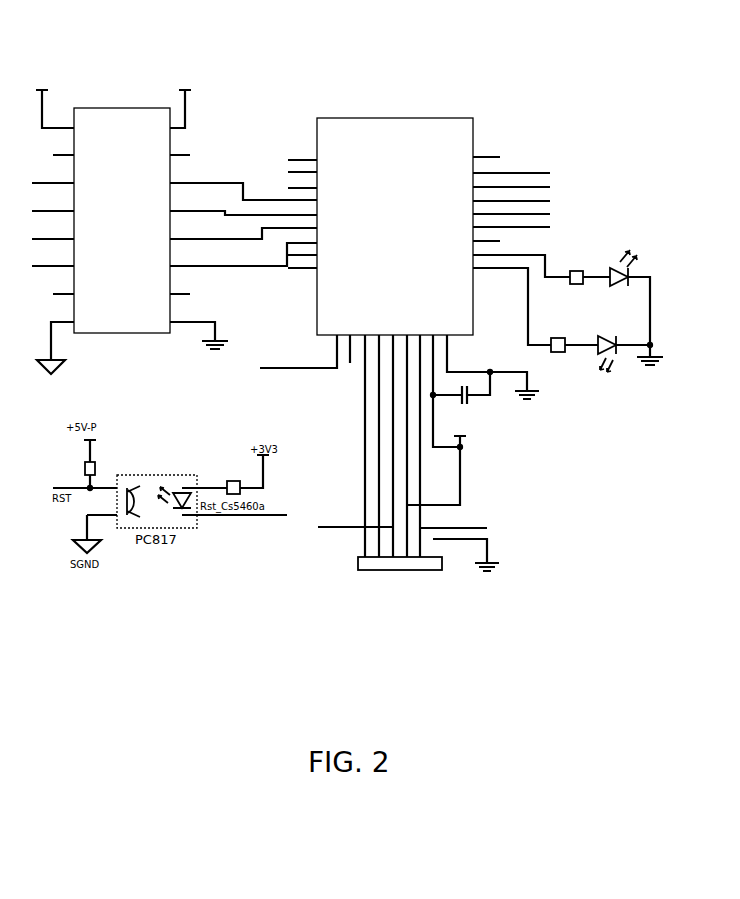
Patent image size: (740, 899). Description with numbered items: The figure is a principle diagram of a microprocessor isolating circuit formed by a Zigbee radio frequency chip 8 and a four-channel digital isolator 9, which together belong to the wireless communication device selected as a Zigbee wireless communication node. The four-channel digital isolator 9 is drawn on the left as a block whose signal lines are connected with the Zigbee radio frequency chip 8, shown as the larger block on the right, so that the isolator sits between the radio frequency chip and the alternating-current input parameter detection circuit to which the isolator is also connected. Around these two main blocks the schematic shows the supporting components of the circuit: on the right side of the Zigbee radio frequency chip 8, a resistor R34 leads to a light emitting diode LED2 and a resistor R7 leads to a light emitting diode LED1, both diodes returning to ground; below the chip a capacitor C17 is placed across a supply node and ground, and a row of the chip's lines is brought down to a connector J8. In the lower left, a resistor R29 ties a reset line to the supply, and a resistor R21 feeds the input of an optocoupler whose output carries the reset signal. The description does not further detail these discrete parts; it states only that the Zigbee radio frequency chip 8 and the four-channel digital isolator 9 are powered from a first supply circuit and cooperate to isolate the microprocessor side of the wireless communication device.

The four-channel digital isolator 9 is at (100, 126).
The Zigbee radio frequency chip 8 is at (451, 308).
The resistor R34 is at (577, 271).
The resistor R7 is at (556, 339).
The light emitting diode LED1 is at (607, 347).
The light emitting diode LED2 is at (621, 277).
The capacitor C17 is at (475, 398).
The connector J8 is at (400, 571).
The resistor R29 is at (77, 468).
The resistor R21 is at (231, 481).